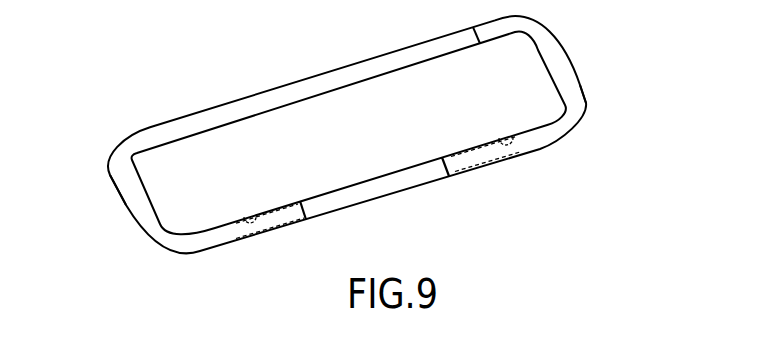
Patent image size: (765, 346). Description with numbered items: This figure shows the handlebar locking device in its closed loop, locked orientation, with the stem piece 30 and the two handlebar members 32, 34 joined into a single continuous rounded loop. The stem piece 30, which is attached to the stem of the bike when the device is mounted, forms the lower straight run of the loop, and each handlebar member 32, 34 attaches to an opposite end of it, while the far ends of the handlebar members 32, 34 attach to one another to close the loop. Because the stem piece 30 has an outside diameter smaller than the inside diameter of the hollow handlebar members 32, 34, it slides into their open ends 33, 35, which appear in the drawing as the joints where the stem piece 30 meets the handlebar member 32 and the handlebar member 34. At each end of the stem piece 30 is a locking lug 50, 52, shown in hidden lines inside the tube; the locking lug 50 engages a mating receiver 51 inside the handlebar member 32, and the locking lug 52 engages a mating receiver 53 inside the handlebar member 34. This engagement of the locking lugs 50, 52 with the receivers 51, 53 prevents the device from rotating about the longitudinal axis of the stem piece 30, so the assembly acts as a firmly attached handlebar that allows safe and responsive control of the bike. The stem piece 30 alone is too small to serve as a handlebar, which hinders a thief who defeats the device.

The stem piece 30 is at (375, 193).
The handlebar member 32 is at (128, 208).
The open end 33 is at (303, 195).
The handlebar member 34 is at (571, 63).
The open end 35 is at (436, 150).
The locking lug 50 is at (268, 207).
The mating receiver 51 is at (250, 228).
The locking lug 52 is at (468, 148).
The mating receiver 53 is at (508, 147).